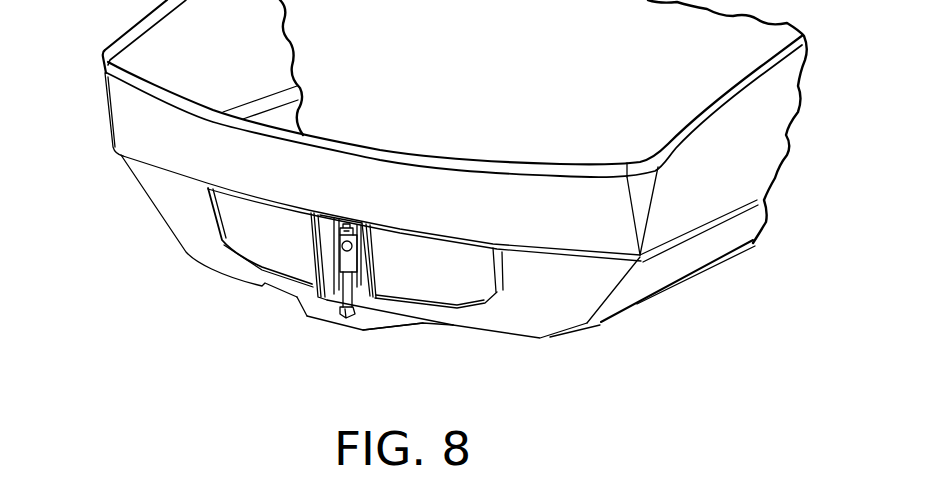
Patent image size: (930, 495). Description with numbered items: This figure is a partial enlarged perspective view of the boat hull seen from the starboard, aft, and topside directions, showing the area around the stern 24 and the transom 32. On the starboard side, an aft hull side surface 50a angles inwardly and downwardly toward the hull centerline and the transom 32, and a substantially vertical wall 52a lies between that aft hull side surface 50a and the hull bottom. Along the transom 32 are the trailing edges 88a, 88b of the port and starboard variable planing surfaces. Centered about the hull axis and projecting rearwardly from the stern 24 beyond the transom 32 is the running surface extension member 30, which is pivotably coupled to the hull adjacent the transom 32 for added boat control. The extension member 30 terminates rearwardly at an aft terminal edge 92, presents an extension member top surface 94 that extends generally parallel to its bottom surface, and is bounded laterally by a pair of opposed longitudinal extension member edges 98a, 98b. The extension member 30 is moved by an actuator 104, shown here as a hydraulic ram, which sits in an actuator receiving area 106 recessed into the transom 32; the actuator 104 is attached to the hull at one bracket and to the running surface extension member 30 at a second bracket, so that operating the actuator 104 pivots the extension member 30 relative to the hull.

The stern 24 is at (68, 120).
The running surface extension member 30 is at (320, 370).
The transom 32 is at (552, 320).
The aft hull side surface 50a is at (653, 270).
The substantially vertical wall 52a is at (710, 262).
The trailing edge 88a is at (500, 340).
The trailing edge 88b is at (198, 267).
The aft terminal edge 92 is at (346, 330).
The extension member top surface 94 is at (375, 322).
The longitudinal extension member edge 98a is at (388, 333).
The longitudinal extension member edge 98b is at (296, 302).
The actuator 104 is at (353, 248).
The actuator receiving area 106 is at (330, 243).